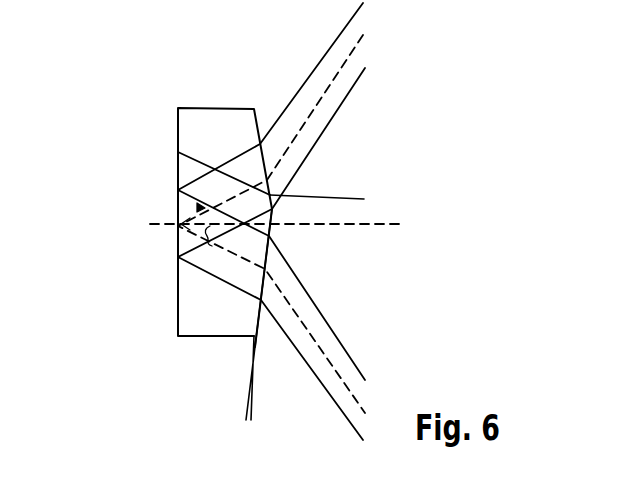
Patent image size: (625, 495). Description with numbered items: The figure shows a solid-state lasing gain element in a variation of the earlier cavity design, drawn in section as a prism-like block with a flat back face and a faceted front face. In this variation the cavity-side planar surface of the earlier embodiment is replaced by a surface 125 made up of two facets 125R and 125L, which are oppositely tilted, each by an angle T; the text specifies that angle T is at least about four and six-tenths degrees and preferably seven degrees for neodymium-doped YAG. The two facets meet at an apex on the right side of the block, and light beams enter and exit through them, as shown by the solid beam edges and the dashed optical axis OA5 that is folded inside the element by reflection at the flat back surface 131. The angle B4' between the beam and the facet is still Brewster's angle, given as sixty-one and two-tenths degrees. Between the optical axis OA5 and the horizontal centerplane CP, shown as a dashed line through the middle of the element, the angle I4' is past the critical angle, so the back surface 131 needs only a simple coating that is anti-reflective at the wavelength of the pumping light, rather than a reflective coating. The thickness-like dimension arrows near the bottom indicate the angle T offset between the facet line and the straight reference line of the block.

The surface 131 is at (178, 286).
The surface 125 is at (382, 248).
The facet 125L is at (272, 209).
The facet 125R is at (276, 228).
The optical axis OA5 is at (178, 152).
The centerplane CP is at (365, 225).
The angle I4' is at (152, 190).
The angle B4' is at (345, 166).
The angle T is at (277, 410).